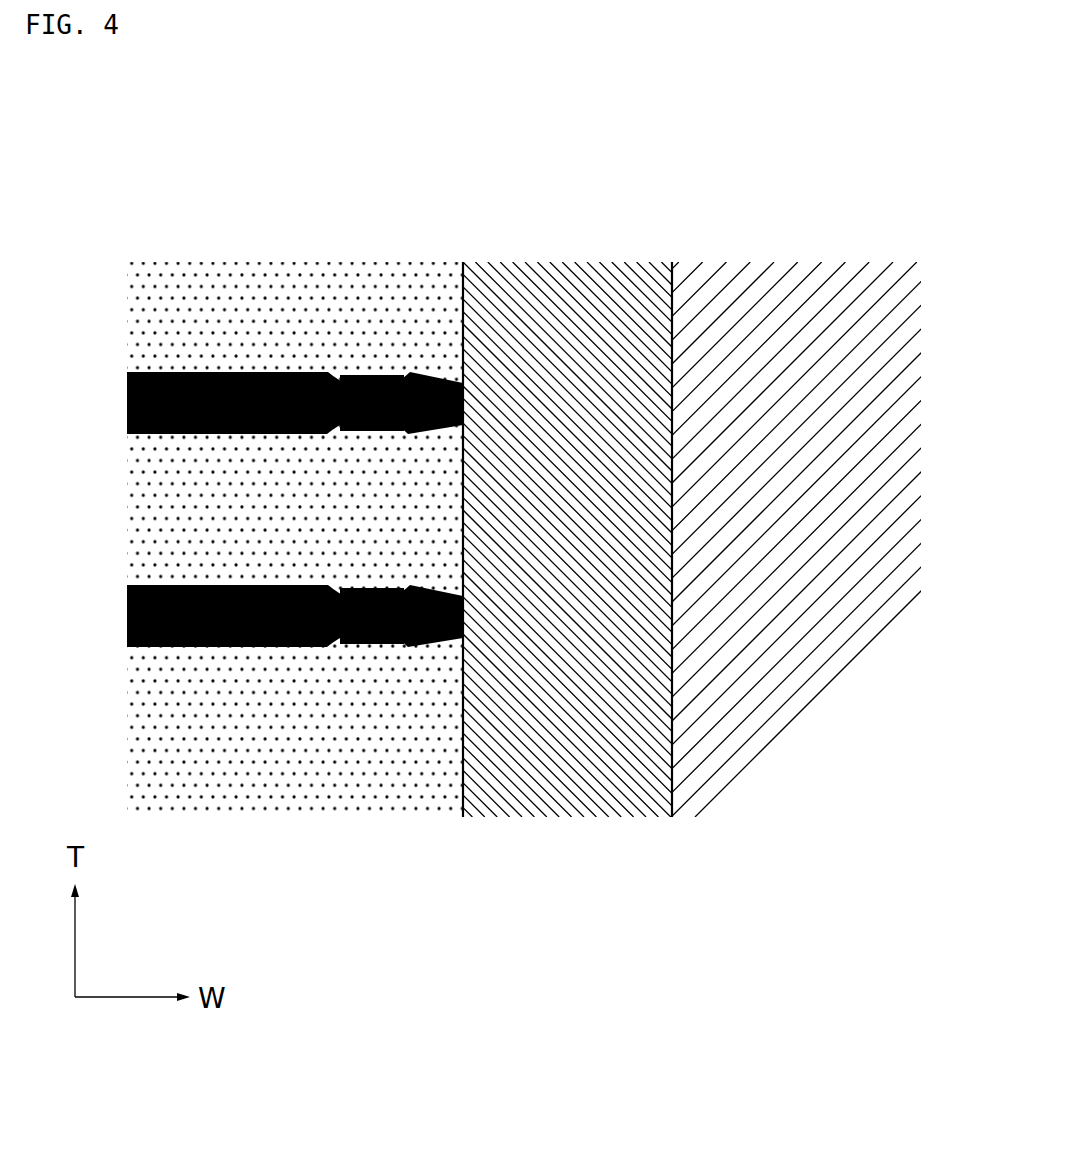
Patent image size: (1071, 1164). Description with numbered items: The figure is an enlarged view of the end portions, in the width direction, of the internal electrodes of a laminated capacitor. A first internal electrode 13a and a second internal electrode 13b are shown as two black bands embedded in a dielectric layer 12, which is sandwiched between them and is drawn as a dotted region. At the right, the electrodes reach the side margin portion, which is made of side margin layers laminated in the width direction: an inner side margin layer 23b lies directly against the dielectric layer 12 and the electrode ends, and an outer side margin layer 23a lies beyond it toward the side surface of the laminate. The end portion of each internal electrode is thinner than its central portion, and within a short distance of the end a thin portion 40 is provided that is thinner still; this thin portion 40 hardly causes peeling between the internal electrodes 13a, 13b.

The dielectric layer 12 is at (223, 297).
The first internal electrode 13a is at (290, 372).
The second internal electrode 13b is at (232, 648).
The thin portion 40 is at (373, 390).
The outer side margin layer 23a is at (797, 293).
The inner side margin layer 23b is at (573, 293).